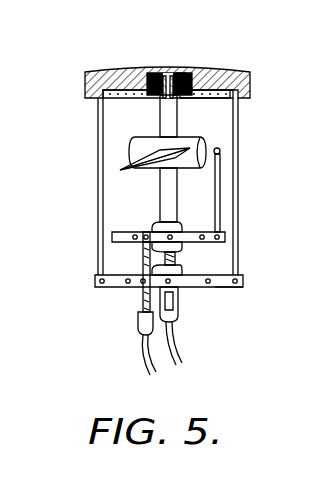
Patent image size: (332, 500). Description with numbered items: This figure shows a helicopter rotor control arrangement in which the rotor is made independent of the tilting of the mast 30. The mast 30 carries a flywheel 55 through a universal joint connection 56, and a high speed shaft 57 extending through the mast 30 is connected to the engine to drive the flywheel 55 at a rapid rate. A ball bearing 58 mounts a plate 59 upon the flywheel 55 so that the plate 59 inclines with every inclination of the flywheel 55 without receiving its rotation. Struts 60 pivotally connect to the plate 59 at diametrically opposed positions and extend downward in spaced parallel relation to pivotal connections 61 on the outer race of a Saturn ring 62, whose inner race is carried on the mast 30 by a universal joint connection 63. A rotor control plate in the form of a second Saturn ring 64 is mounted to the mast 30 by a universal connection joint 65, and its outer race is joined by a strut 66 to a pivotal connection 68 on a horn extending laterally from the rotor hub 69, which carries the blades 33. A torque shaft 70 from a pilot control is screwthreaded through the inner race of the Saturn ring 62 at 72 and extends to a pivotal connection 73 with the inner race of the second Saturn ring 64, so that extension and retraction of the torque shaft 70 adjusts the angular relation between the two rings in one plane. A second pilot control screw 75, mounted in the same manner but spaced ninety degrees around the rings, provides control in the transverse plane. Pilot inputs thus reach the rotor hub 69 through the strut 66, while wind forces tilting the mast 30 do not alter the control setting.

The mast 30 is at (166, 187).
The blades 33 is at (135, 154).
The flywheel 55 is at (125, 70).
The universal joint connection 56 is at (165, 73).
The high speed shaft 57 is at (161, 99).
The ball bearing 58 is at (187, 72).
The plate 59 is at (212, 90).
The struts 60 is at (103, 179).
The pivotal connections 61 is at (98, 277).
The Saturn ring 62 is at (226, 290).
The universal joint connection 63 is at (182, 300).
The second Saturn ring 64 is at (194, 232).
The universal connection joint 65 is at (156, 228).
The strut 66 is at (221, 172).
The pivotal connection 68 is at (220, 151).
The rotor hub 69 is at (198, 150).
The torque shaft 70 is at (141, 305).
The screwthreaded connection 72 is at (145, 288).
The pivotal connection 73 is at (146, 234).
The second pilot control screw 75 is at (176, 262).